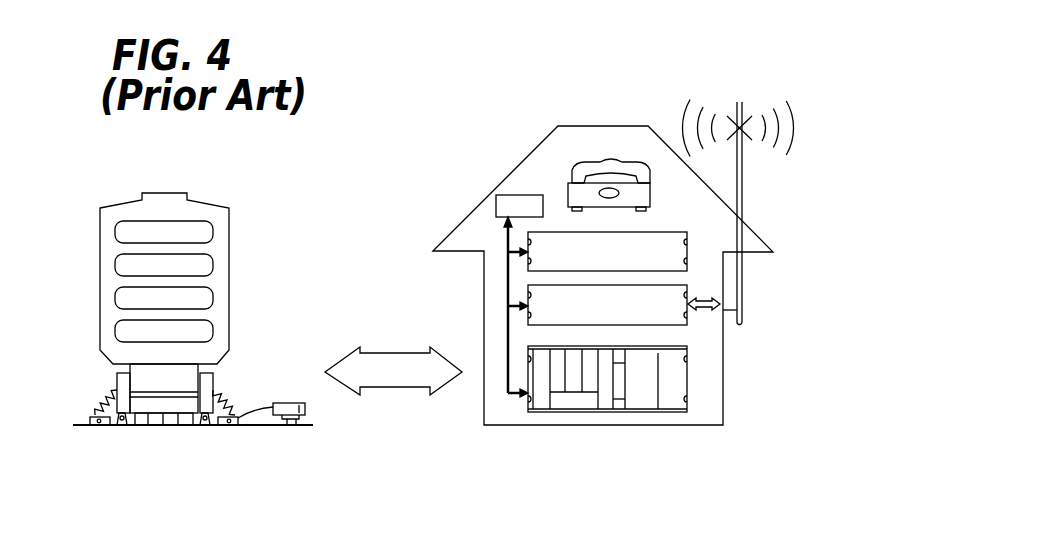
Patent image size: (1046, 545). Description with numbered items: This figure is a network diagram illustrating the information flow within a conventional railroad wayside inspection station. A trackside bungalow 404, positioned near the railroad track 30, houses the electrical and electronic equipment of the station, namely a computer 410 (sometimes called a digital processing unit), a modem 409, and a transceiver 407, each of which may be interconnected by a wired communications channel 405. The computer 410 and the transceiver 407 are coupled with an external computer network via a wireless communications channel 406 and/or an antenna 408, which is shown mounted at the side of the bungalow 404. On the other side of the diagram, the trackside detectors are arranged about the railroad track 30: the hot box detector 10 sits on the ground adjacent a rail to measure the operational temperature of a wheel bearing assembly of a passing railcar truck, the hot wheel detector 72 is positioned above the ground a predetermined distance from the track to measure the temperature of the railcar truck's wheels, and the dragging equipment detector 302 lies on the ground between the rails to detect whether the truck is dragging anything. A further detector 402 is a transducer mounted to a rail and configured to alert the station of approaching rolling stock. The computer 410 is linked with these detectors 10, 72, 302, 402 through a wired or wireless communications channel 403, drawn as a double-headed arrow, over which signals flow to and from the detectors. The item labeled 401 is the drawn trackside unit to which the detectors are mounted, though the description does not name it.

The portable electronic device 401 is at (197, 208).
The detector 402 is at (202, 425).
The dragging equipment detector 302 is at (155, 420).
The hot box detector 10 is at (93, 415).
The hot wheel detector 72 is at (305, 407).
The railroad track 30 is at (128, 442).
The wired or wireless communications channel 403 is at (418, 382).
The trackside bungalow 404 is at (608, 123).
The wired communications channel 405 is at (687, 243).
The wireless communications channel 406 is at (680, 297).
The transceiver 407 is at (687, 383).
The antenna 408 is at (742, 180).
The modem 409 is at (577, 175).
The computer 410 is at (505, 205).